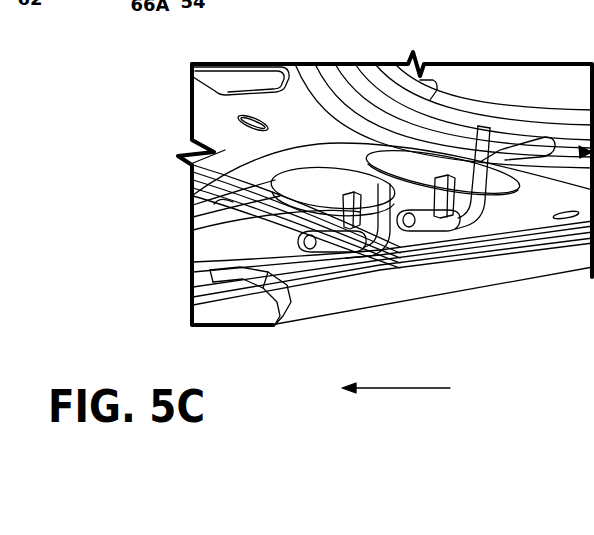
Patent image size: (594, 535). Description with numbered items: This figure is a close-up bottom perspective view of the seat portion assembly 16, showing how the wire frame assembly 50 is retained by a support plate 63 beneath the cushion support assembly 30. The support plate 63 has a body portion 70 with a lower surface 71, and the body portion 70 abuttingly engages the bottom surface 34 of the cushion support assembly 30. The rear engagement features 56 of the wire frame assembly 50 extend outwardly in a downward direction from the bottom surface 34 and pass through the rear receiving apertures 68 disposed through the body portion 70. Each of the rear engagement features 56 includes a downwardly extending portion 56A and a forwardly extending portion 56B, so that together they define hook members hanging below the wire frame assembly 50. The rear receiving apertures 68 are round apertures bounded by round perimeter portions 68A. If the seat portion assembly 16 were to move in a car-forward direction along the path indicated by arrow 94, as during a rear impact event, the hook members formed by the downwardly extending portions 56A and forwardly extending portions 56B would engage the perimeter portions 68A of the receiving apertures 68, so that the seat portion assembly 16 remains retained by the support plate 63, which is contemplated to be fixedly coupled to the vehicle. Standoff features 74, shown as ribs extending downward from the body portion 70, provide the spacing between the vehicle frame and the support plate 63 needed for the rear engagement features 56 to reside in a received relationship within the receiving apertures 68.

The seat portion assembly 16 is at (574, 311).
The cushion support assembly 30 is at (547, 281).
The bottom surface 34 is at (398, 176).
The wire frame assembly 50 is at (490, 213).
The rear engagement features 56 is at (414, 228).
The downwardly extending portions 56A is at (480, 127).
The forwardly extending portions 56B is at (330, 246).
The support plate 63 is at (218, 132).
The rear receiving apertures 68 is at (432, 196).
The round perimeter portions 68A is at (210, 190).
The body portion 70 is at (293, 122).
The lower surface 71 is at (331, 135).
The standoff features 74 is at (431, 174).
The arrow 94 is at (377, 388).